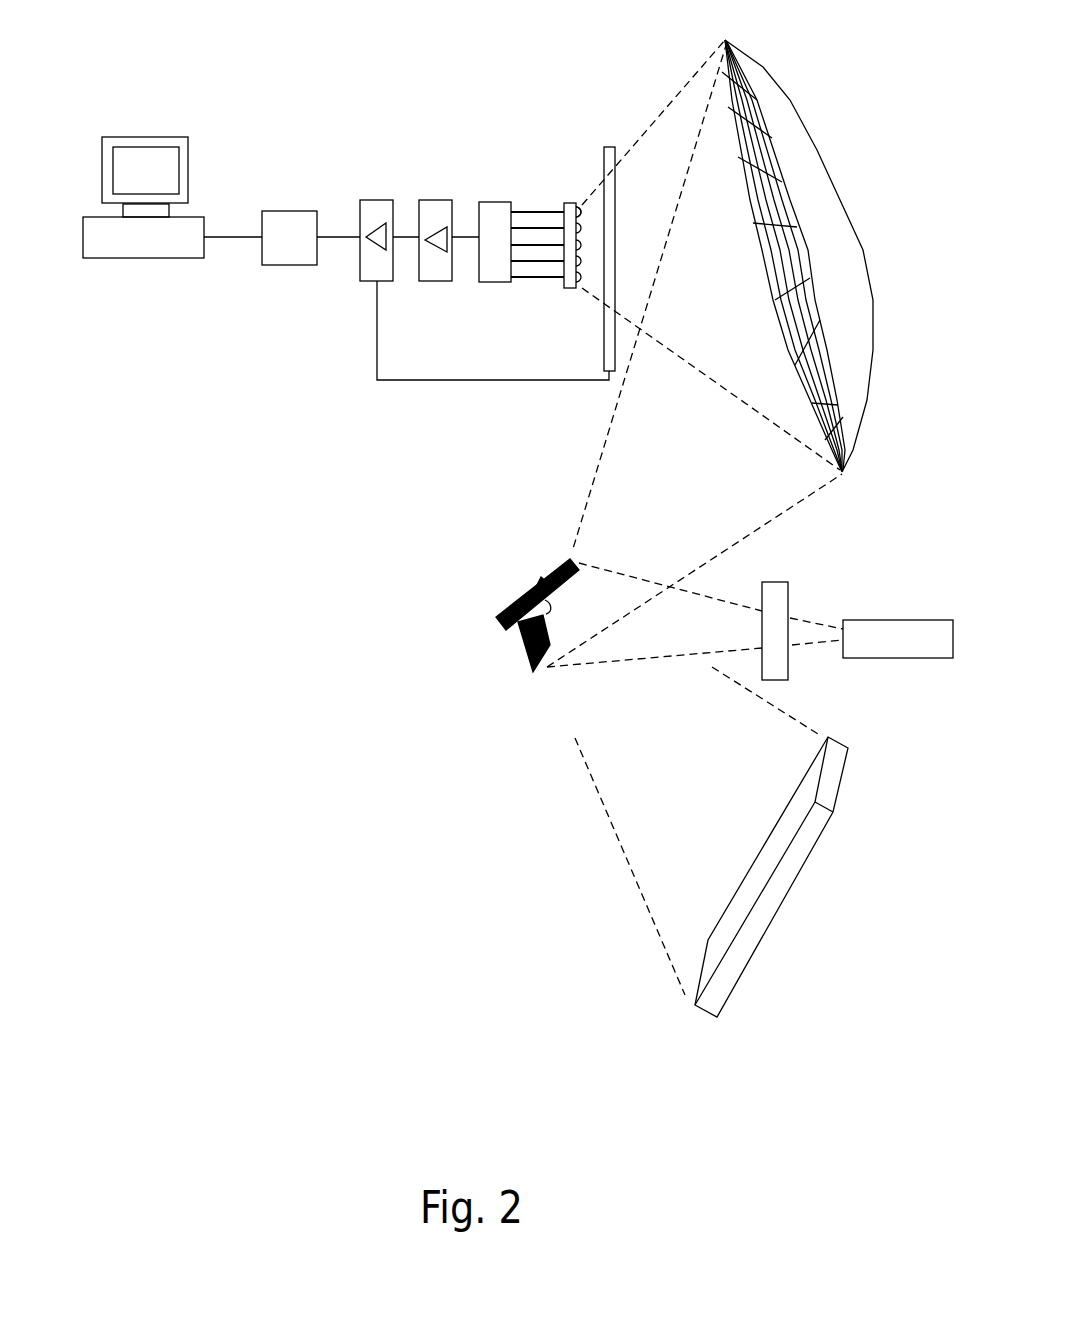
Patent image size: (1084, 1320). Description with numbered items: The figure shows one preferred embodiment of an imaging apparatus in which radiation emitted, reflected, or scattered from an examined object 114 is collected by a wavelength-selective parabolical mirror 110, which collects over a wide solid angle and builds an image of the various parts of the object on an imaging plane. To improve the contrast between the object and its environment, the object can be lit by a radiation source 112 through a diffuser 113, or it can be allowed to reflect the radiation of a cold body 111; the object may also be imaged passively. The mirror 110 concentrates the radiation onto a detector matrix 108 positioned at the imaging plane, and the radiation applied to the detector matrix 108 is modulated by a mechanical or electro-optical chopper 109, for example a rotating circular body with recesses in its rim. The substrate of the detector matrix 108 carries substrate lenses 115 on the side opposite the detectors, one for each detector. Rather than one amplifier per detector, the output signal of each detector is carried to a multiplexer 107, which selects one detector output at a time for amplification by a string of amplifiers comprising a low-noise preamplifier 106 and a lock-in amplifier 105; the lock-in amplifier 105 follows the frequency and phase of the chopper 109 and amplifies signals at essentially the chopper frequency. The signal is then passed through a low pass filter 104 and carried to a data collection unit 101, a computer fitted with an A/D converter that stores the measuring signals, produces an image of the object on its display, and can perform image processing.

The data collection unit 101 is at (180, 137).
The low pass filter 104 is at (293, 211).
The lock-in amplifier 105 is at (377, 200).
The preamplifier 106 is at (443, 282).
The multiplexer 107 is at (502, 202).
The detector matrix 108 is at (563, 280).
The chopper 109 is at (613, 147).
The parabolical mirror 110 is at (790, 90).
The cold body 111 is at (843, 780).
The radiation source 112 is at (892, 620).
The diffuser 113 is at (790, 583).
The examined object 114 is at (503, 613).
The substrate lenses 115 is at (582, 203).